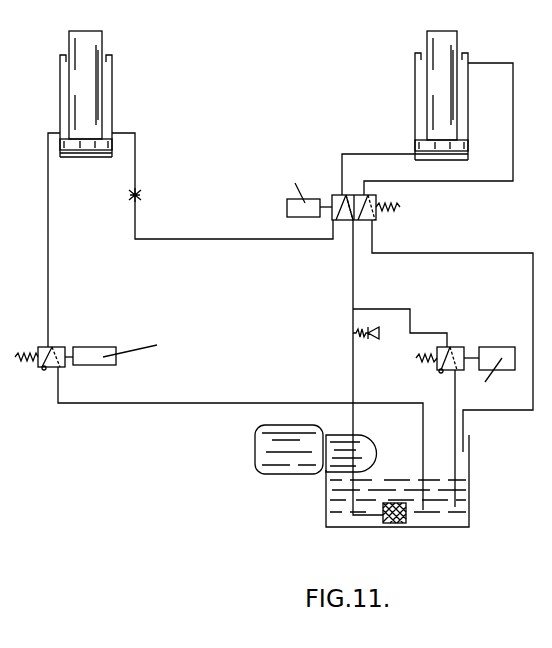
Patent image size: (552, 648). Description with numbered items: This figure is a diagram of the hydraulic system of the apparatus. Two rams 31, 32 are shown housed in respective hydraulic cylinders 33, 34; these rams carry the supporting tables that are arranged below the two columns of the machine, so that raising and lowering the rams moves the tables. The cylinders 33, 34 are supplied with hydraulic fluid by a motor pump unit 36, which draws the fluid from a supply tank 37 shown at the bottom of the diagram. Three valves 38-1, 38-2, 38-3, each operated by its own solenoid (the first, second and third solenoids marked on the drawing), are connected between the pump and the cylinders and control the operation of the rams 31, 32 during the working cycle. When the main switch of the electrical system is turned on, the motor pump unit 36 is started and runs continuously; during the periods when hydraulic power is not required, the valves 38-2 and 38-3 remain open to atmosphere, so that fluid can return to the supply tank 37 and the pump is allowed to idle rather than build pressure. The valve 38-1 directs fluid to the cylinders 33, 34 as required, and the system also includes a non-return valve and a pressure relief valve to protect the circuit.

The ram 31 is at (78, 43).
The ram 32 is at (443, 44).
The hydraulic cylinder 33 is at (108, 103).
The hydraulic cylinder 34 is at (418, 97).
The motor pump unit 36 is at (345, 462).
The supply tank 37 is at (410, 466).
The valve 38-1 is at (351, 216).
The valve 38-2 is at (54, 350).
The valve 38-3 is at (452, 348).